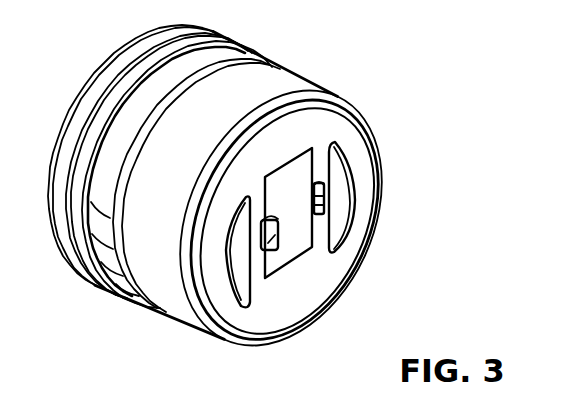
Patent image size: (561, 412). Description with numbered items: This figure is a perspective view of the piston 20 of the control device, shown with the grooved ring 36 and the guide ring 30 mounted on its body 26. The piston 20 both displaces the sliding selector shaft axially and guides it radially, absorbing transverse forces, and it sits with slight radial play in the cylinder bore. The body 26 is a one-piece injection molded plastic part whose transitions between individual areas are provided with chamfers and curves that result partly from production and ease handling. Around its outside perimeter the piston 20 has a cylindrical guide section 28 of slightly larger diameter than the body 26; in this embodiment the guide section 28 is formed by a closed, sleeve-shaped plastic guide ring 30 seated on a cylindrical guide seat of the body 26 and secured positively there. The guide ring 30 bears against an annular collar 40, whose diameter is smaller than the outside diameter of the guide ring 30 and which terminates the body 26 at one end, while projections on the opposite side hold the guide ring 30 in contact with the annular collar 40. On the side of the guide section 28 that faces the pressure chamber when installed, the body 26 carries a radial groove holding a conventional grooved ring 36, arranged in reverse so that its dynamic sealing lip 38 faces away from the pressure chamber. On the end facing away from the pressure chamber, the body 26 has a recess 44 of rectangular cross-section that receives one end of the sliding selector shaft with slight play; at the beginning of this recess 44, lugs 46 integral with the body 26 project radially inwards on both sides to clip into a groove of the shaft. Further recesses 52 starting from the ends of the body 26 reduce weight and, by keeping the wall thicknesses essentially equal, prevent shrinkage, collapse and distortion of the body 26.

The piston 20 is at (342, 89).
The body 26 is at (323, 270).
The guide section 28 is at (304, 75).
The guide ring 30 is at (184, 181).
The grooved ring 36 is at (93, 114).
The dynamic sealing lip 38 is at (108, 287).
The annular collar 40 is at (284, 105).
The recess 44 is at (303, 212).
The lugs 46 is at (328, 212).
The recesses 52 is at (339, 195).